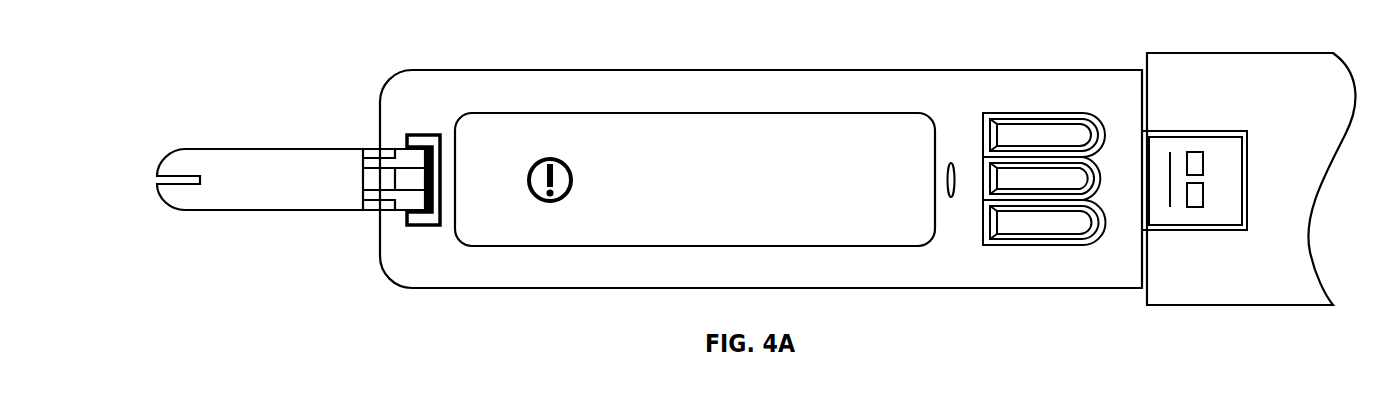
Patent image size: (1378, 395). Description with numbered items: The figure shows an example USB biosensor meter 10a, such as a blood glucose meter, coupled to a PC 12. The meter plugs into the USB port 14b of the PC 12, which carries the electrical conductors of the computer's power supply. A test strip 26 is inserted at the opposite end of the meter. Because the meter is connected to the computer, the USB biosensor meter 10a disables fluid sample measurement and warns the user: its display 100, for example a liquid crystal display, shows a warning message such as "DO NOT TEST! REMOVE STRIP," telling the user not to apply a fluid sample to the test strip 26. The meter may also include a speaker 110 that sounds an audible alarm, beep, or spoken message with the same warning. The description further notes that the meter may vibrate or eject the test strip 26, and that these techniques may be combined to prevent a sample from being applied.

The USB biosensor meter 10a is at (467, 70).
The test strip 26 is at (245, 153).
The display 100 is at (783, 127).
The speaker 110 is at (951, 156).
The PC 12 is at (1180, 53).
The USB port 14b is at (1212, 131).